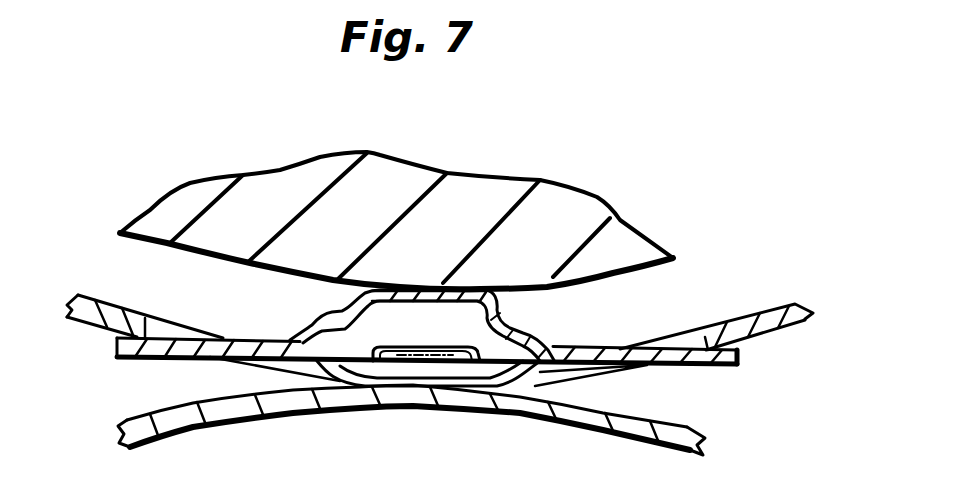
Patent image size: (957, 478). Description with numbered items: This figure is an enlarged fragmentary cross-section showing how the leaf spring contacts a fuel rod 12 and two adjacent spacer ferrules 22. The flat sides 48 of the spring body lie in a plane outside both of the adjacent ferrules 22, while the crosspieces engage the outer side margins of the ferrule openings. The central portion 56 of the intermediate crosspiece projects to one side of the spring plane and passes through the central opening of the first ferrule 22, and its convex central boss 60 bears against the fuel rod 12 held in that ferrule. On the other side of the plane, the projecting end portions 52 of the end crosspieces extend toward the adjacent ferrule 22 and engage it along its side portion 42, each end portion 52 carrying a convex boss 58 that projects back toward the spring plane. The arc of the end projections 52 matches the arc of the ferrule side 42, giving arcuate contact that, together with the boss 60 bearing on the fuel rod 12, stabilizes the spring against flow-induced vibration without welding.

The fuel rod 12 is at (180, 196).
The spacer ferrule 22 is at (95, 322).
The side portion of ferrule 42 is at (262, 410).
The sides of spring body 48 is at (152, 343).
The projecting end portions 52 is at (522, 380).
The central portion of intermediate crosspiece 56 is at (510, 315).
The boss or dimple on end portion 58 is at (436, 346).
The central boss or dimple 60 is at (467, 283).